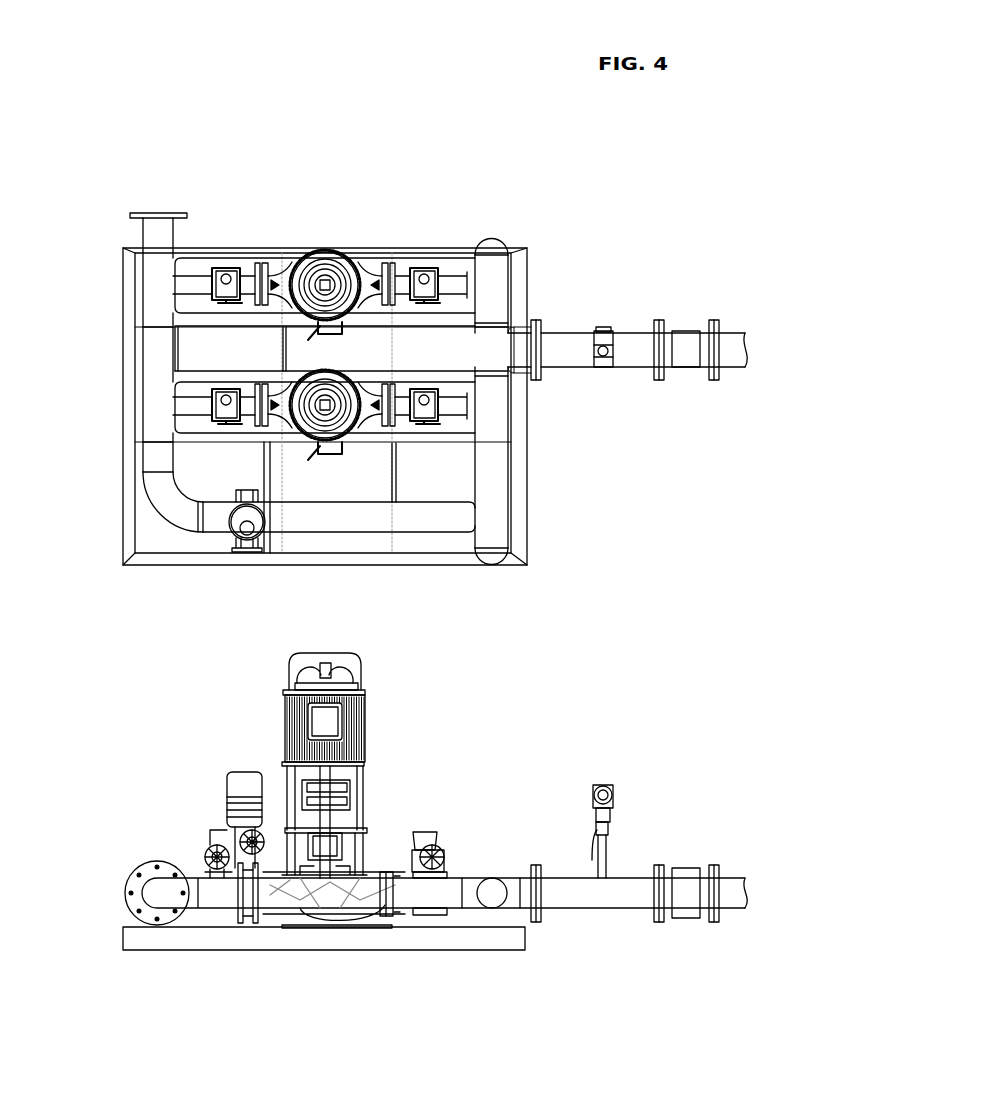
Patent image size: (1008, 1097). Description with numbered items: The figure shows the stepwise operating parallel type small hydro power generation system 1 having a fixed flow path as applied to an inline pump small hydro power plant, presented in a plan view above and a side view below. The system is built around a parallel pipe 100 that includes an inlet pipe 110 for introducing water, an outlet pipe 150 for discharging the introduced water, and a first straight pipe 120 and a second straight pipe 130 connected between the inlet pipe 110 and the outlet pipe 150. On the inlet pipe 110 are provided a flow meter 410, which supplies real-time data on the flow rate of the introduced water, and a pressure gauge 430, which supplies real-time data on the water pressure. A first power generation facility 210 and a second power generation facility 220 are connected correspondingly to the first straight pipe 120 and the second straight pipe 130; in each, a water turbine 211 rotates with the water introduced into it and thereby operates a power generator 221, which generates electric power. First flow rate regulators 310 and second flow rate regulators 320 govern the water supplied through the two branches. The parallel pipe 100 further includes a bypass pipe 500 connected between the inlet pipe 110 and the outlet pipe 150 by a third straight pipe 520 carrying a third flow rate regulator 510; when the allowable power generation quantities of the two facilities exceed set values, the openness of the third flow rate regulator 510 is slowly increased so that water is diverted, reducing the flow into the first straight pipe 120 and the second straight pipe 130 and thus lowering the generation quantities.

The stepwise operating parallel type small hydro power generation system 1 is at (298, 102).
The parallel pipe 100 is at (493, 233).
The inlet pipe 110 is at (636, 340).
The first straight pipe 120 is at (260, 262).
The second straight pipe 130 is at (384, 408).
The outlet pipe 150 is at (147, 236).
The first power generation facility 210 is at (322, 250).
The water turbine 211 is at (345, 888).
The second power generation facility 220 is at (325, 447).
The power generator 221 is at (350, 717).
The first flow rate regulator 310 is at (226, 265).
The second flow rate regulator 320 is at (212, 405).
The flow meter 410 is at (686, 330).
The pressure gauge 430 is at (601, 328).
The bypass pipe 500 is at (187, 559).
The third flow rate regulator 510 is at (236, 540).
The third straight pipe 520 is at (180, 515).